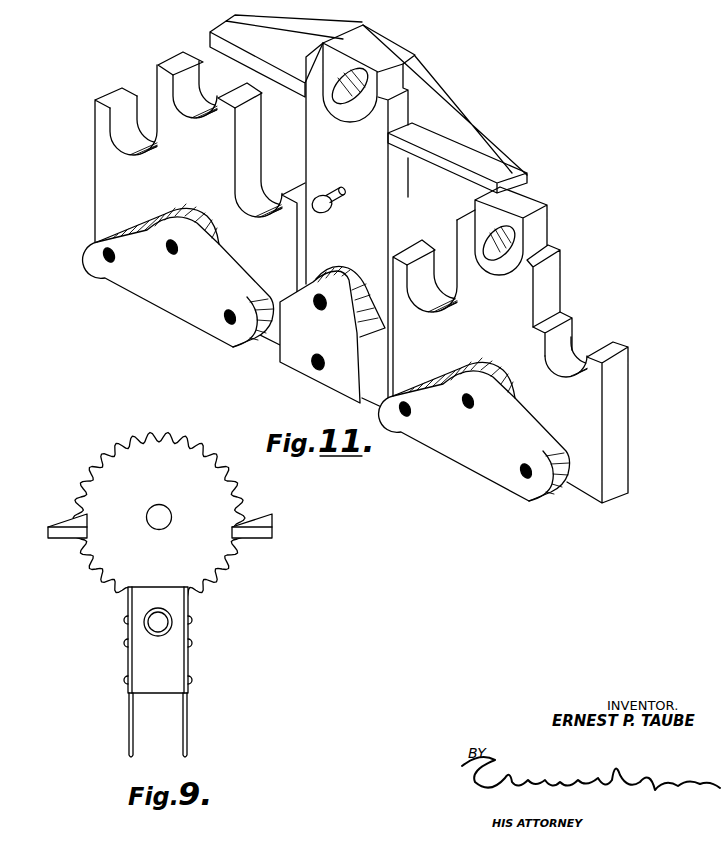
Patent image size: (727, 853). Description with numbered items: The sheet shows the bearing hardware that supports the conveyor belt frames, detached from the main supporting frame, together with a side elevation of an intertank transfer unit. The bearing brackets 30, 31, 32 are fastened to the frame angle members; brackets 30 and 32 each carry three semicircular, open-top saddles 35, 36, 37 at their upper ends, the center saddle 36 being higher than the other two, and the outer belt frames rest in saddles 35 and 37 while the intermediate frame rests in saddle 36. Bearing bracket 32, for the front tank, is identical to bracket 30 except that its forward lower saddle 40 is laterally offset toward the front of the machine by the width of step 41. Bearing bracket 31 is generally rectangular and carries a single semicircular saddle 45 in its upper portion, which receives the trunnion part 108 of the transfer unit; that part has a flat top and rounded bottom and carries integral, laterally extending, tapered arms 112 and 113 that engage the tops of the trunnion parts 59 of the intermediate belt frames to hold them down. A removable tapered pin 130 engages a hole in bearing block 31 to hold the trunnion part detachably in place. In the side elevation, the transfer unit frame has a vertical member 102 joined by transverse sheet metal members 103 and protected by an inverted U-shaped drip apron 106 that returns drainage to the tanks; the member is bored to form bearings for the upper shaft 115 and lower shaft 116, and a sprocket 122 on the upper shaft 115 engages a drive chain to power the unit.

In FIG. 11, the bearing bracket 30 is at (185, 199).
In FIG. 11, the bearing bracket 31 is at (357, 217).
In FIG. 11, the bearing bracket 32 is at (524, 345).
In FIG. 11, the saddle 35 is at (120, 128).
In FIG. 11, the saddle 36 is at (182, 93).
In FIG. 11, the saddle 37 is at (258, 195).
In FIG. 11, the forward lower saddle 40 is at (575, 350).
In FIG. 11, the step 41 is at (562, 320).
In FIG. 11, the semicircular saddle 45 is at (372, 118).
In FIG. 11, the trunnion part 59 is at (538, 227).
In FIG. 9, the vertical member 102 is at (163, 672).
In FIG. 9, the transverse sheet metal member 103 is at (128, 613).
In FIG. 9, the drip apron 106 is at (163, 683).
In FIG. 11, the trunnion part 108 is at (384, 55).
In FIG. 11, the tapered arm 112 is at (223, 28).
In FIG. 9, the tapered arm 112 is at (62, 525).
In FIG. 11, the tapered arm 113 is at (513, 173).
In FIG. 9, the tapered arm 113 is at (260, 527).
In FIG. 9, the upper shaft 115 is at (163, 513).
In FIG. 9, the lower shaft 116 is at (158, 628).
In FIG. 9, the sprocket 122 is at (216, 484).
In FIG. 11, the tapered pin 130 is at (334, 211).